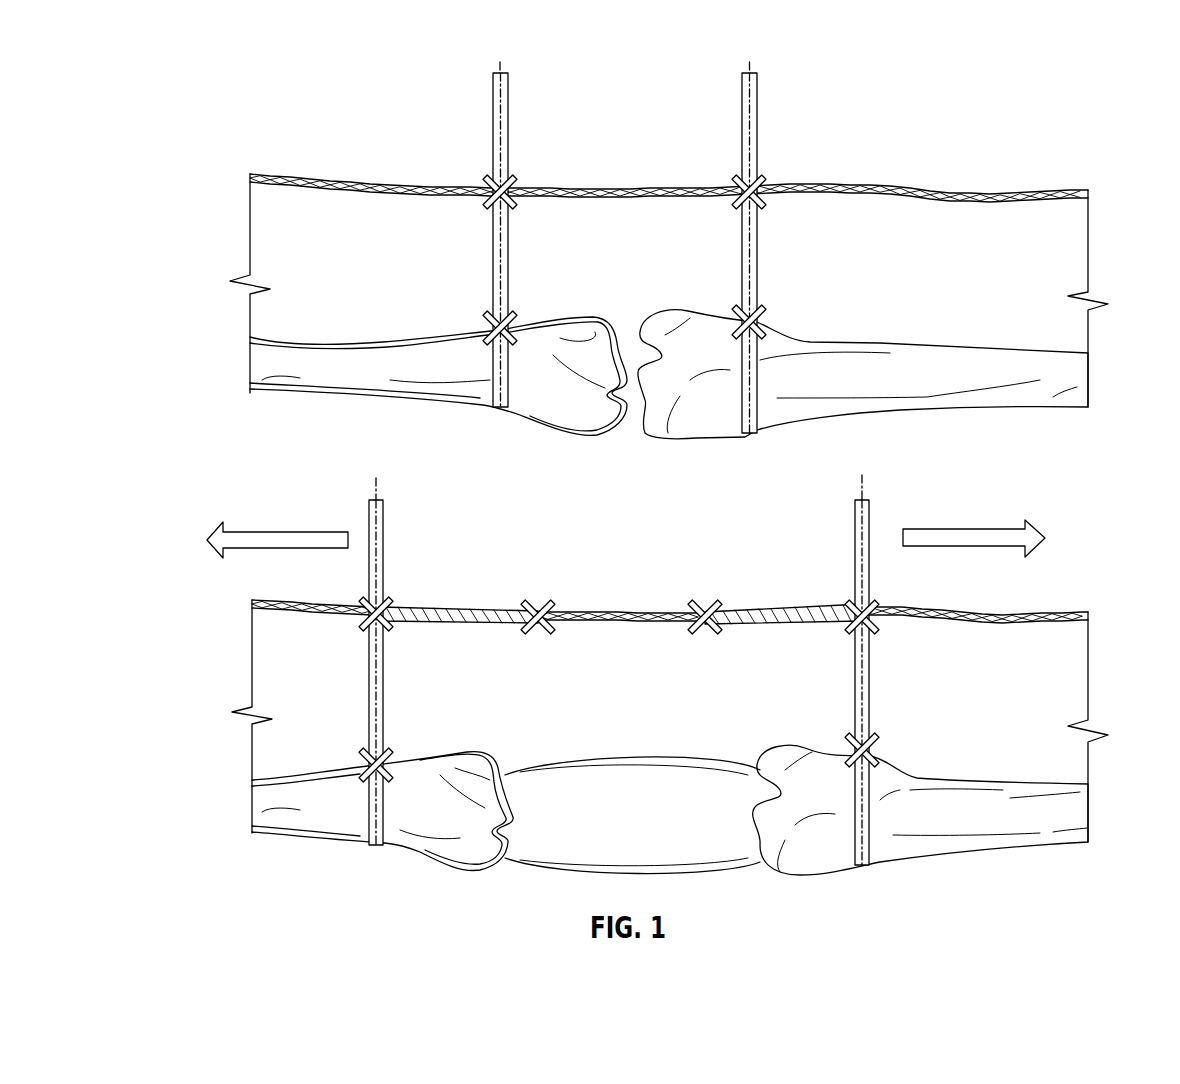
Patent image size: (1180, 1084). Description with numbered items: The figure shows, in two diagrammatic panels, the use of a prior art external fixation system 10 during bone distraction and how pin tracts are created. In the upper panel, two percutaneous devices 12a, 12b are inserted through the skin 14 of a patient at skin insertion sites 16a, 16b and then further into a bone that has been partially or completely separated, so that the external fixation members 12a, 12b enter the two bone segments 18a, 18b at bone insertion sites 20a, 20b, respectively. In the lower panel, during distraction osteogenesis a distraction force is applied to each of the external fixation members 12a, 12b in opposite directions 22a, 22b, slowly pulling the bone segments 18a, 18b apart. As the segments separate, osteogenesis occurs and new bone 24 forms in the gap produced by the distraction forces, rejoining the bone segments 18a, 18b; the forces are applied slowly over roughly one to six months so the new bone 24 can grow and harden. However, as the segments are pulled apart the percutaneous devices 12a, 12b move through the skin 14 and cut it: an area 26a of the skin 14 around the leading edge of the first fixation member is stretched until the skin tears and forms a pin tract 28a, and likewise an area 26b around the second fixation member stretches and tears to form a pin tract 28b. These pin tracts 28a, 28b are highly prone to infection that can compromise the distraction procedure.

The external fixation system 10 is at (340, 105).
The percutaneous device 12a is at (493, 118).
The percutaneous device 12b is at (757, 126).
The skin 14 is at (1060, 190).
The insertion site 16a is at (486, 180).
The insertion site 16b is at (765, 180).
The bone segment 18a is at (262, 385).
The bone segment 18b is at (1070, 372).
The insertion site 20a is at (486, 316).
The insertion site 20b is at (764, 314).
The direction 22a is at (235, 550).
The direction 22b is at (985, 527).
The new bone 24 is at (625, 878).
The area of the skin 26a is at (362, 624).
The area of the skin 26b is at (882, 623).
The pin tract 28a is at (465, 592).
The pin tract 28b is at (796, 592).